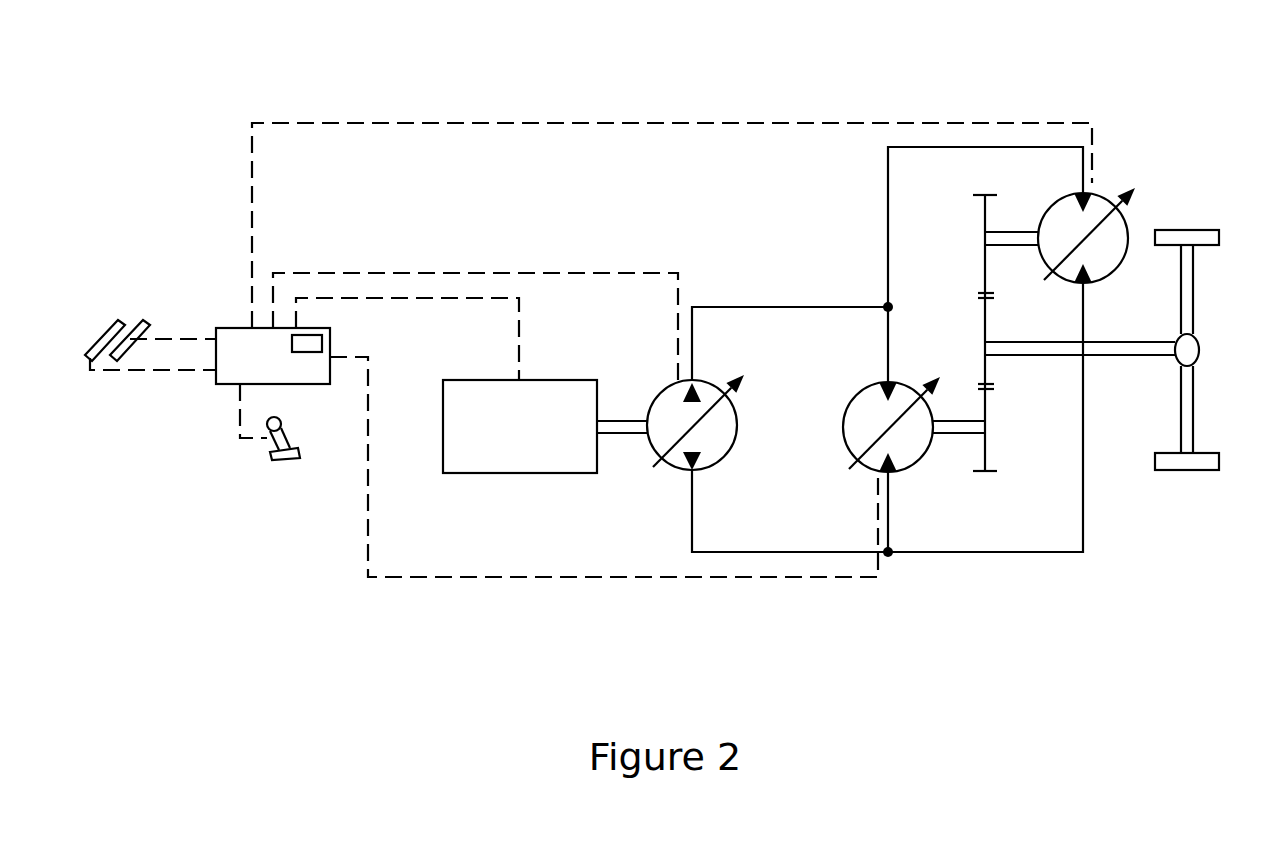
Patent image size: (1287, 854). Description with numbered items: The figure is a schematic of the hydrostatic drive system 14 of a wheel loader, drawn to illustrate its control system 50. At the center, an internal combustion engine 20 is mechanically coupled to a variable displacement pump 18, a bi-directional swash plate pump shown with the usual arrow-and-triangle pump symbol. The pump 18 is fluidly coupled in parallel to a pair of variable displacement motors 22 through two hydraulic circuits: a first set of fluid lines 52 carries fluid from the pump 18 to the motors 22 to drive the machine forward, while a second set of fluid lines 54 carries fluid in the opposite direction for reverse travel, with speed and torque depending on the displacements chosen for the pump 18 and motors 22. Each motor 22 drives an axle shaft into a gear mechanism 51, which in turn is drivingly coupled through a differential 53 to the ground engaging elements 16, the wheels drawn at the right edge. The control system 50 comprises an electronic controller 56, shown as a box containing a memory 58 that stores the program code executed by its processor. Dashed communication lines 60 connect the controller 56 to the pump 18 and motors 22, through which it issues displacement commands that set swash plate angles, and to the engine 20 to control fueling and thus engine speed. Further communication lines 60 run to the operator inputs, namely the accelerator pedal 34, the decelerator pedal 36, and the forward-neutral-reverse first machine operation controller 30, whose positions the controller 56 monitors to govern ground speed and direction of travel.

The hydrostatic drive system 14 is at (668, 604).
The ground engaging elements 16 is at (1188, 230).
The variable displacement pump 18 is at (733, 457).
The internal combustion engine 20 is at (525, 473).
The variable displacement motors 22 is at (1044, 212).
The first machine operation controller 30 is at (283, 422).
The accelerator pedal 34 is at (104, 322).
The decelerator pedal 36 is at (134, 320).
The control system 50 is at (744, 58).
The gear mechanism 51 is at (946, 308).
The first set of fluid lines 52 is at (794, 307).
The differential 53 is at (1199, 348).
The second set of fluid lines 54 is at (980, 552).
The electronic controller 56 is at (296, 328).
The memory 58 is at (330, 335).
The communication lines 60 is at (185, 339).